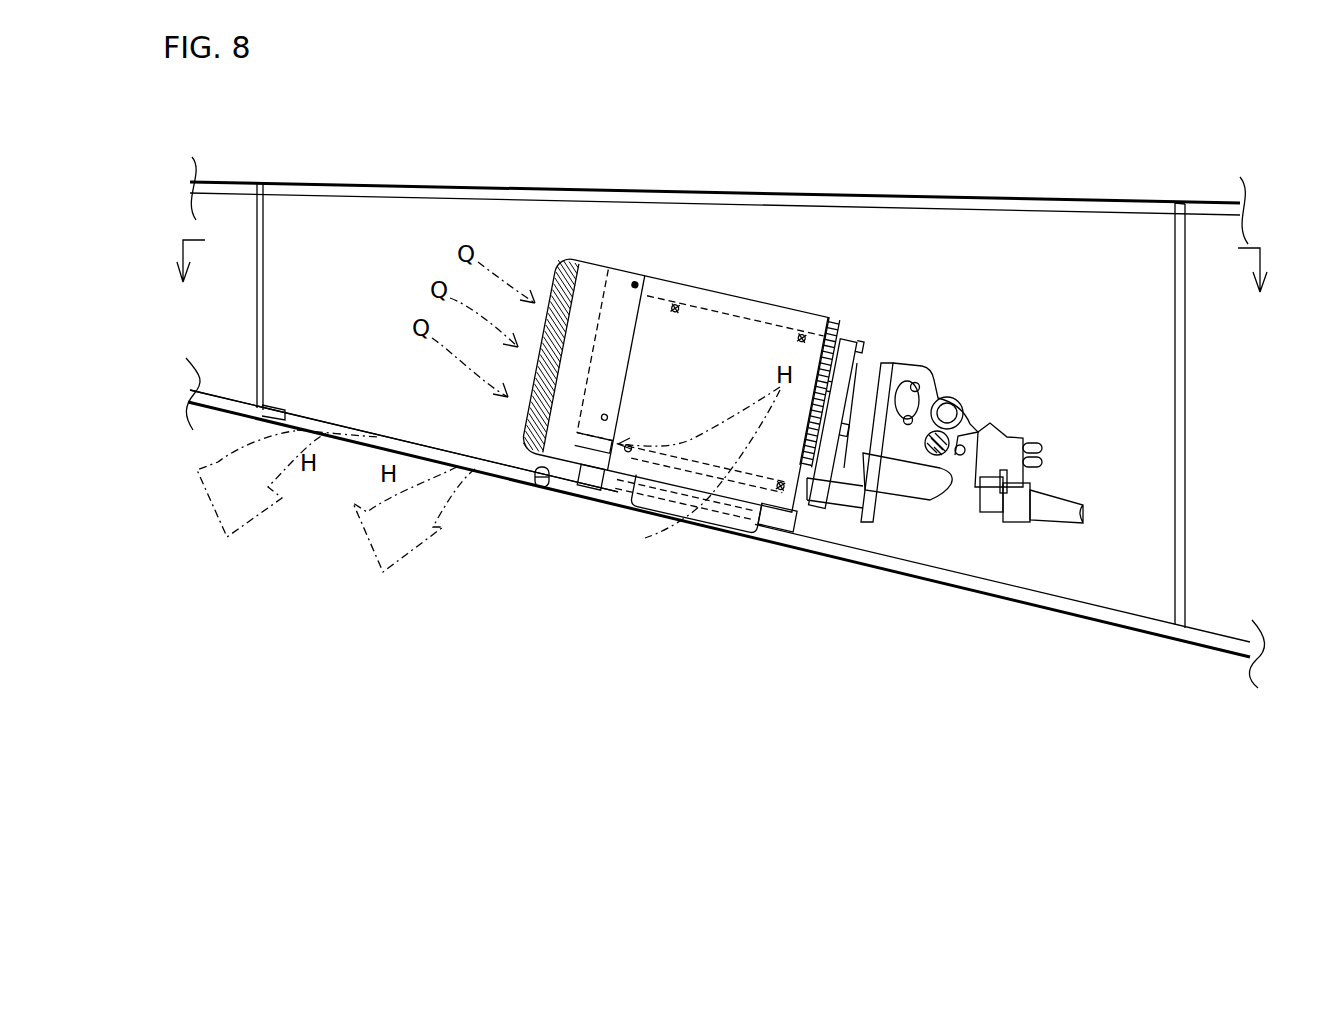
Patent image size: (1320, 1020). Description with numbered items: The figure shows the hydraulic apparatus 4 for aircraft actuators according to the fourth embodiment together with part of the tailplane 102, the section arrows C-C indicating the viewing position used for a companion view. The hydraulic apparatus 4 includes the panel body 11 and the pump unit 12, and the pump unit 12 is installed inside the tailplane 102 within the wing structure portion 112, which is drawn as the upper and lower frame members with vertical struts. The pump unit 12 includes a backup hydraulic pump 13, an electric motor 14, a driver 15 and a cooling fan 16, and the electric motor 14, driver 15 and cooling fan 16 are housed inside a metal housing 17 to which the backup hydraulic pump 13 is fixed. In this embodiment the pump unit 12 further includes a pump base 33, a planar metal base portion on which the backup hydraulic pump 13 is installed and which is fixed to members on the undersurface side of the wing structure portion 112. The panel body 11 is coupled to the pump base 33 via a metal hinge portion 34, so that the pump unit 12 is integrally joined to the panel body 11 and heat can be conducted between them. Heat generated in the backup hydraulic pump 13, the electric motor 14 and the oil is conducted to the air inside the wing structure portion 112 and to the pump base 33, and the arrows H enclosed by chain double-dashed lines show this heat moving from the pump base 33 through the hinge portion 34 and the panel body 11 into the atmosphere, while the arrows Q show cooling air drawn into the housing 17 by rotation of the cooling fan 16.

The tailplane 102 is at (1062, 172).
The wing structure portion 112 is at (958, 195).
The pump unit 12 is at (1037, 387).
The hydraulic apparatus 4 is at (1180, 203).
The electric motor 14 is at (745, 318).
The cooling fan 16 is at (597, 262).
The housing 17 is at (795, 315).
The backup hydraulic pump 13 is at (893, 518).
The driver 15 is at (712, 532).
The pump base 33 is at (740, 533).
The hinge portion 34 is at (542, 486).
The panel body 11 is at (522, 487).